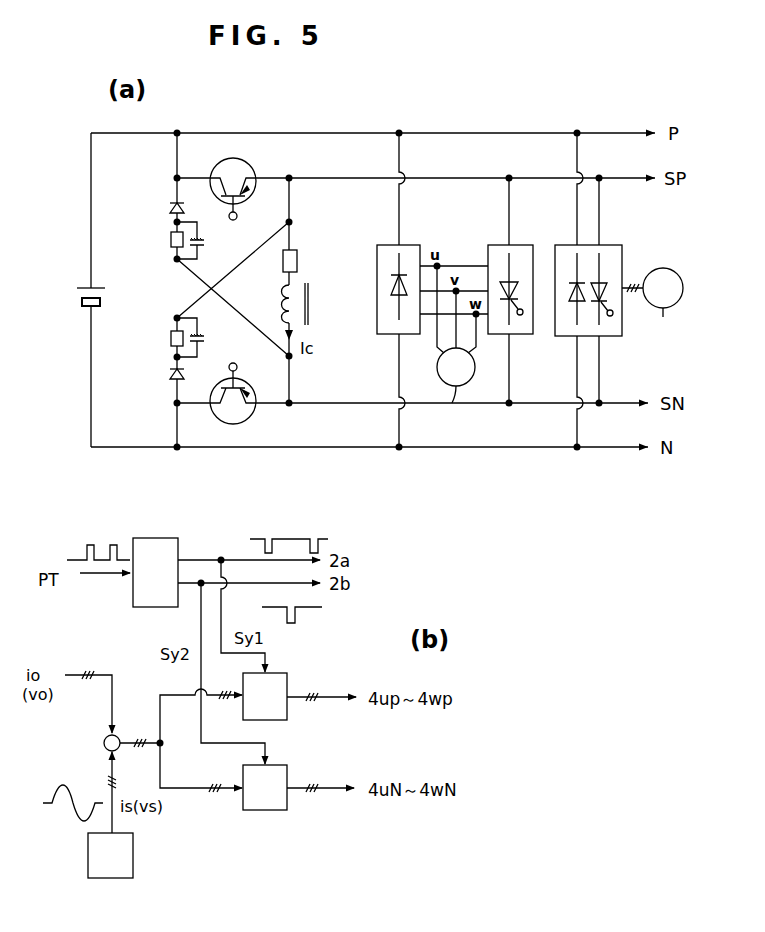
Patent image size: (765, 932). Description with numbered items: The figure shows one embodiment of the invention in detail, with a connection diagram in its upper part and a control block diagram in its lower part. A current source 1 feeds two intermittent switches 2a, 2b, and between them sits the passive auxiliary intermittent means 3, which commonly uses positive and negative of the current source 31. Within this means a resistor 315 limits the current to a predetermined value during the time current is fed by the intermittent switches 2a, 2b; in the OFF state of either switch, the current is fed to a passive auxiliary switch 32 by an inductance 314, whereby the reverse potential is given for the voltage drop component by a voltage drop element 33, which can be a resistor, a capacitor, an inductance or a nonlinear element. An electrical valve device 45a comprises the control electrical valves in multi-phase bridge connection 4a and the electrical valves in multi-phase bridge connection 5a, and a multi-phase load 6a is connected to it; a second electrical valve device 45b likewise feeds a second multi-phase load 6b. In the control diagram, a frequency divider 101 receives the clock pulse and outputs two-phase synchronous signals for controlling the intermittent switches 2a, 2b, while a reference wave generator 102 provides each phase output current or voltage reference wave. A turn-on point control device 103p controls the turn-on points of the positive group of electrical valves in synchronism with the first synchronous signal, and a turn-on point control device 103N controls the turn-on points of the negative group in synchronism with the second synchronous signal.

The current source 1 is at (80, 297).
The intermittent switch 2a is at (249, 172).
The intermittent switch 2b is at (249, 415).
The passive auxiliary intermittent means 3 is at (252, 287).
The passive auxiliary switch 32 is at (168, 206).
The voltage drop element 33 is at (176, 257).
The current source 31 is at (328, 287).
The resistor 315 is at (312, 261).
The inductance 314 is at (312, 304).
The electrical valve device 45a is at (455, 239).
The electrical valves in multi-phase bridge connection 5a is at (407, 256).
The control electrical valves in multi-phase bridge connection 4a is at (496, 273).
The electrical valve device 45b is at (624, 266).
The multi-phase load 6a is at (467, 438).
The multi-phase load 6b is at (680, 345).
The frequency divider 101 is at (158, 540).
The reference wave generator 102 is at (133, 850).
The turn-on point control device 103p is at (287, 675).
The turn-on point control device 103N is at (273, 810).